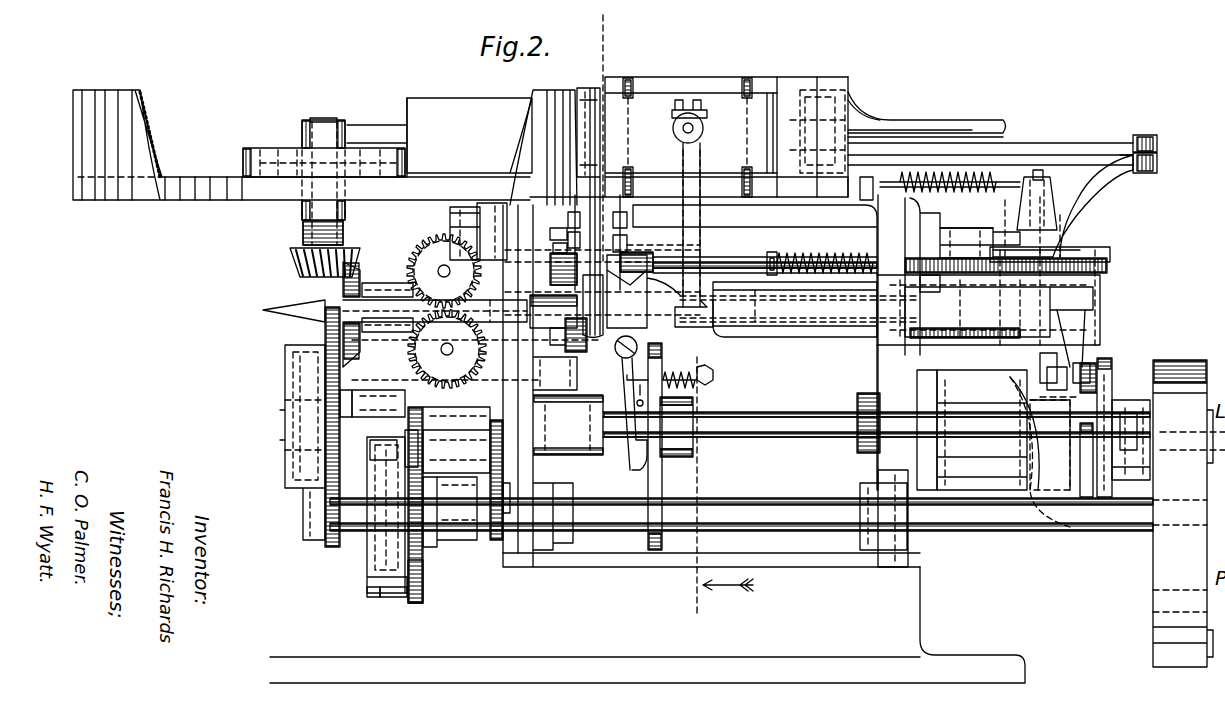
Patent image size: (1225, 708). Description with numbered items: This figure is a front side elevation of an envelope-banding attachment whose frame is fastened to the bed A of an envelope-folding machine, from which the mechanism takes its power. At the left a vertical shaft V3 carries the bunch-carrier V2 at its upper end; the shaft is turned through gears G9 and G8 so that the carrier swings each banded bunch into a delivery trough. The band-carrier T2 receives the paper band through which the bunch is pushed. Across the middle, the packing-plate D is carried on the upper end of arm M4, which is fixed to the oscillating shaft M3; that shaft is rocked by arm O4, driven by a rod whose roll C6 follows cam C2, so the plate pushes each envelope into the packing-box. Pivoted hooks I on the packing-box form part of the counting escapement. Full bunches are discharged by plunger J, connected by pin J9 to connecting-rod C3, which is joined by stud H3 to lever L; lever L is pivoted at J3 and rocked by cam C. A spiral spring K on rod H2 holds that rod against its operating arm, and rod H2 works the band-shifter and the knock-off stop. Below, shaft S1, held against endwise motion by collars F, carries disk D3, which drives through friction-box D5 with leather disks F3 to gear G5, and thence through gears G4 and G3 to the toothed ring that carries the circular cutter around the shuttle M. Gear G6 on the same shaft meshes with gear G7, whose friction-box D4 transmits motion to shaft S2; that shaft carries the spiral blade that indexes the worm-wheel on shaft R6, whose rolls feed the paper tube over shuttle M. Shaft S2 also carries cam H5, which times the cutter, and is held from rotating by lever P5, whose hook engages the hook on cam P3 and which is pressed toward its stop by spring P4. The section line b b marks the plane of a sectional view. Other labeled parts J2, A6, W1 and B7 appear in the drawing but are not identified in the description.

The shaft V3 is at (325, 118).
The bunch-carrier V2 is at (469, 135).
The band-carrier T2 is at (585, 90).
The section line b is at (678, 315).
The hooks I is at (627, 137).
The lever L is at (1115, 218).
The packing-plate D is at (699, 213).
The block J2 is at (800, 90).
The plunger J is at (868, 120).
The pin J9 is at (857, 103).
The connecting-rod C3 is at (1045, 143).
The stud H3 is at (1150, 170).
The rod H2 is at (980, 243).
The spiral spring K is at (810, 258).
The bracket A6 is at (450, 220).
The arm M4 is at (697, 238).
The shaft R6 is at (405, 258).
The gear G9 is at (290, 255).
The gear G8 is at (340, 280).
The gear G7 is at (340, 330).
The pointer W1 is at (262, 310).
The shuttle M is at (435, 307).
The friction-box D4 is at (285, 382).
The gear G4 is at (408, 408).
The gear G3 is at (492, 540).
The gear G5 is at (420, 600).
The gear G6 is at (330, 547).
The leather disks F3 is at (367, 550).
The friction-box D5 is at (367, 592).
The disk D3 is at (390, 597).
The collars F is at (555, 567).
The shaft S2 is at (805, 418).
The shaft S1 is at (1020, 530).
The cam P3 is at (663, 490).
The spring P4 is at (713, 380).
The cam H5 is at (618, 460).
The lever P5 is at (631, 431).
The oscillating shaft M3 is at (1093, 300).
The cylinder B7 is at (982, 430).
The pivot J3 is at (1008, 380).
The cam C is at (1050, 445).
The arm O4 is at (1085, 345).
The cam C2 is at (1110, 375).
The roll C6 is at (1120, 405).
The bed A is at (647, 574).